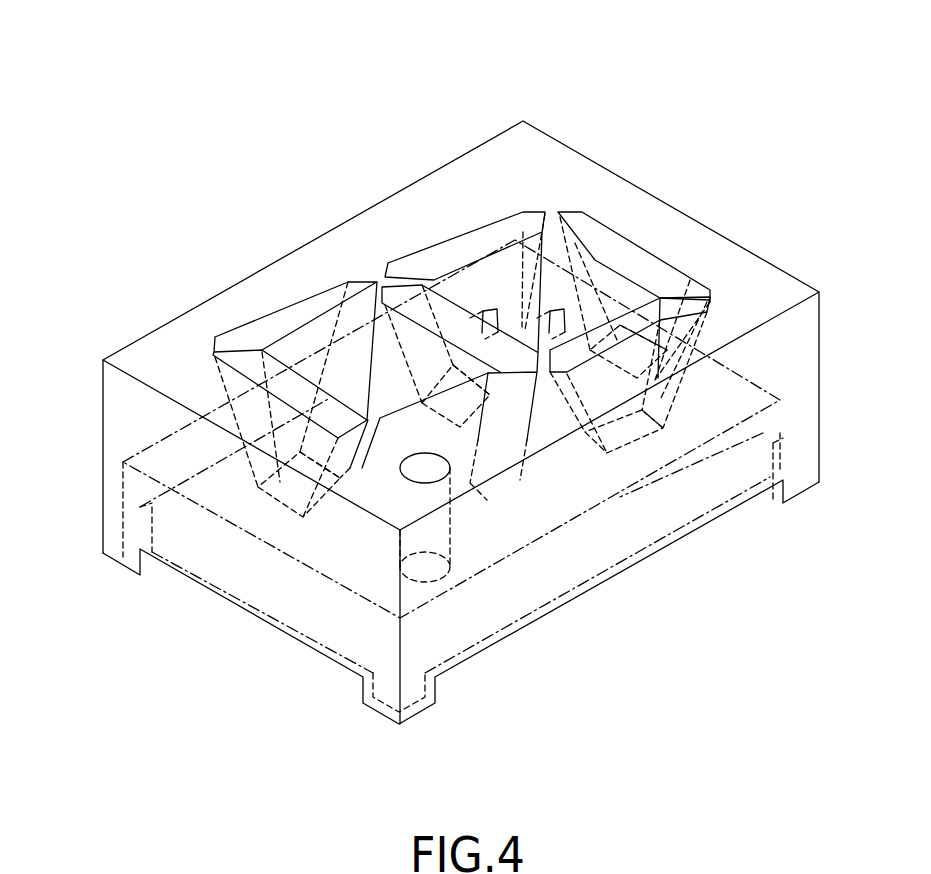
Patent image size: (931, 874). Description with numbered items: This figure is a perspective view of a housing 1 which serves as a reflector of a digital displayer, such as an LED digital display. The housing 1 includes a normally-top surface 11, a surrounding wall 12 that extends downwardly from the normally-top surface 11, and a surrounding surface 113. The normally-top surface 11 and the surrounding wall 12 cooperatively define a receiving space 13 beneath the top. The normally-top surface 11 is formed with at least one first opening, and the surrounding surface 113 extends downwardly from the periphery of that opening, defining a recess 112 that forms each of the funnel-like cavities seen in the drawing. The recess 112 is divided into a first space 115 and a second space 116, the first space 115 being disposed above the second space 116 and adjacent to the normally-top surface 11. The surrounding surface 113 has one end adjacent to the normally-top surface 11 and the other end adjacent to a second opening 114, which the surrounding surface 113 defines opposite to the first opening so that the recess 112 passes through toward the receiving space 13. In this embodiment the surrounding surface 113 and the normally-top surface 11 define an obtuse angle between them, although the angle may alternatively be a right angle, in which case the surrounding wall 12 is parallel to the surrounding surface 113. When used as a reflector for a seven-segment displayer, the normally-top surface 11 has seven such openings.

The housing 1 is at (460, 379).
The normally-top surface 11 is at (268, 264).
The surrounding wall 12 is at (200, 542).
The receiving space 13 is at (323, 603).
The recess 112 is at (250, 370).
The surrounding surface 113 is at (215, 392).
The second opening 114 is at (292, 505).
The first space 115 is at (295, 398).
The second space 116 is at (300, 465).